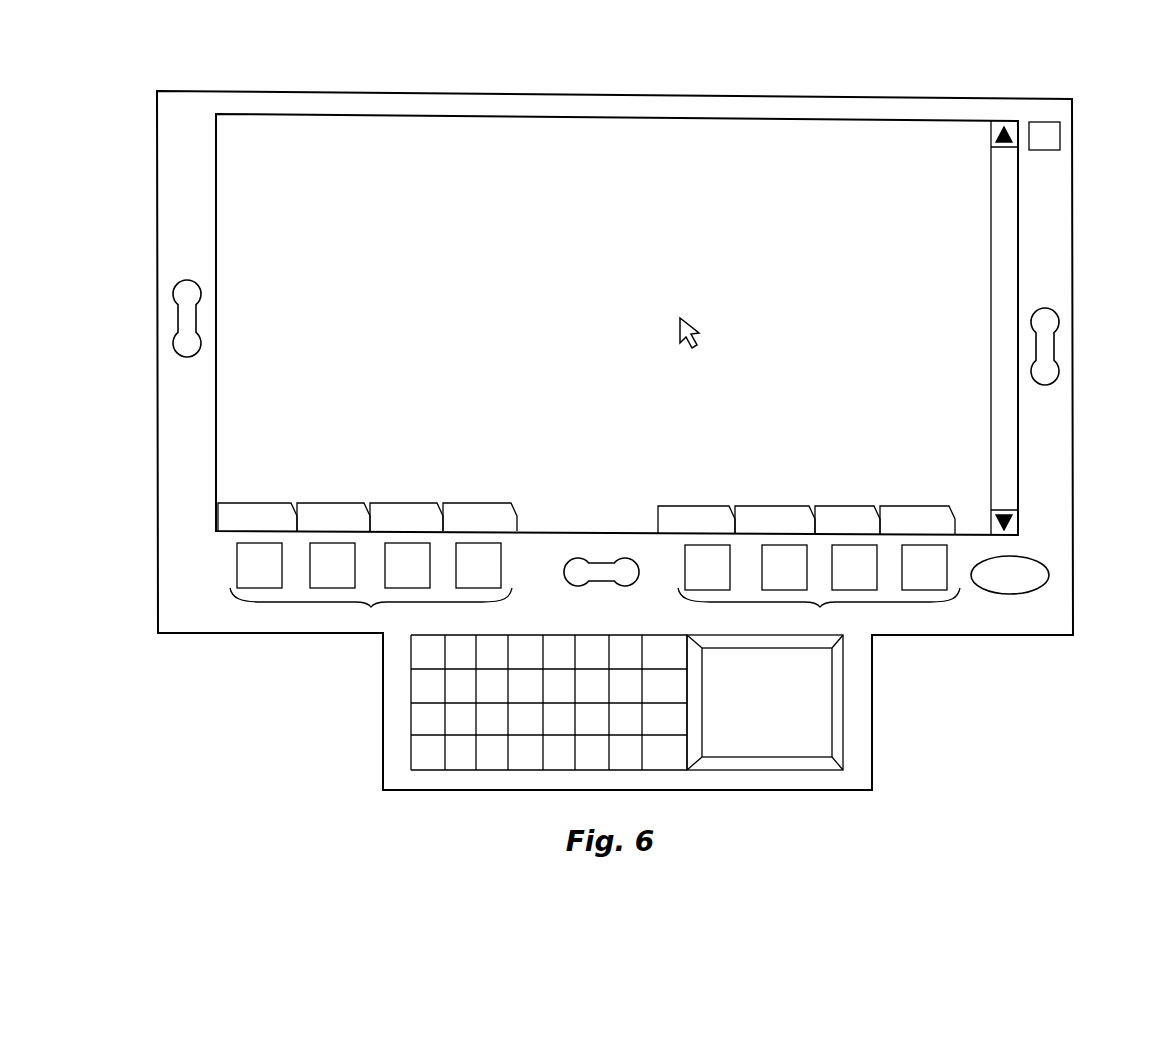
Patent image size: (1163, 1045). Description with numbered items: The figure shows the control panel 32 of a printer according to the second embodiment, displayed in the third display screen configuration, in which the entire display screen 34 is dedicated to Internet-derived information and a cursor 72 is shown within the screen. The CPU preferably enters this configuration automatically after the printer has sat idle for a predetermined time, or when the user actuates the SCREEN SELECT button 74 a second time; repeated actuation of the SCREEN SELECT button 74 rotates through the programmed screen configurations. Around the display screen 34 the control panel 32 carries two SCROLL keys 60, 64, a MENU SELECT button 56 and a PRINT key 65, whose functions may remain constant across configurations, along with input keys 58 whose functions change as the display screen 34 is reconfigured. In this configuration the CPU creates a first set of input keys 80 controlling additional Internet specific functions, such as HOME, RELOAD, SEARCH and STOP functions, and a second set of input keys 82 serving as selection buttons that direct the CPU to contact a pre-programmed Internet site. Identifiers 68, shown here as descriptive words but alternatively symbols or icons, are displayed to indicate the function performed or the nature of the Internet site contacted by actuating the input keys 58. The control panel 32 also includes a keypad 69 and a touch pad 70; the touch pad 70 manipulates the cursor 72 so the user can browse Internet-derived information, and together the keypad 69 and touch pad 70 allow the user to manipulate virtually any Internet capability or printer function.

The control panel 32 is at (158, 625).
The display screen 34 is at (902, 121).
The MENU SELECT button 56 is at (640, 574).
The input keys 58 is at (592, 566).
The SCROLL key 60 is at (178, 321).
The SCROLL key 64 is at (1059, 341).
The PRINT key 65 is at (1061, 134).
The identifiers 68 is at (600, 489).
The keypad 69 is at (411, 715).
The touch pad 70 is at (803, 700).
The cursor 72 is at (700, 325).
The SCREEN SELECT button 74 is at (1028, 575).
The first set of input keys 80 is at (371, 611).
The second set of input keys 82 is at (819, 611).